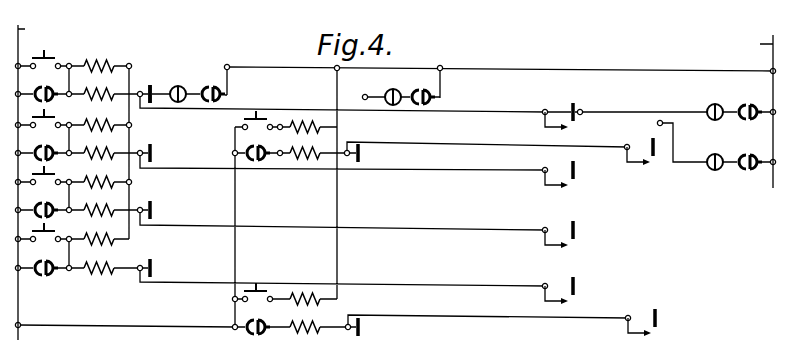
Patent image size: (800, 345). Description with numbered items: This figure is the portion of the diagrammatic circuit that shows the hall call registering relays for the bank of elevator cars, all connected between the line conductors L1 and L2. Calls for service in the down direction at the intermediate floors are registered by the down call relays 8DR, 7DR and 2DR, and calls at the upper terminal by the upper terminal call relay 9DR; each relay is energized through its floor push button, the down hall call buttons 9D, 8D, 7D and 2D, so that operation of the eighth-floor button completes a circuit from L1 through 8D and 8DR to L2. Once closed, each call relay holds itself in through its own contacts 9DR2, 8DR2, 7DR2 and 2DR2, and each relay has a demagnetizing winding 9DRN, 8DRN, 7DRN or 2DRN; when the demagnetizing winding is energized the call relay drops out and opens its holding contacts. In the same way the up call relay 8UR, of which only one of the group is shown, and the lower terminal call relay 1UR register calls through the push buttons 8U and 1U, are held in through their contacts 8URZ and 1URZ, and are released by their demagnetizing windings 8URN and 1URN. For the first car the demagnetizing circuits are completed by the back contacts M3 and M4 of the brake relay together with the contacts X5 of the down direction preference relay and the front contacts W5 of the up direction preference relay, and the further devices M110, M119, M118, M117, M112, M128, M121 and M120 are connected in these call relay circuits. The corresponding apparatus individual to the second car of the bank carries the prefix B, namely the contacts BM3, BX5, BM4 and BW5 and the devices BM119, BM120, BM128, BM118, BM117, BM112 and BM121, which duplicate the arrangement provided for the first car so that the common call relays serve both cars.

The line conductor L1 is at (29, 182).
The line conductor L2 is at (749, 111).
The switch contact 9D is at (50, 55).
The upper terminal call relay 9DR is at (101, 58).
The relay contact 9DR2 is at (40, 88).
The resistor 9DRN is at (96, 87).
The relay M110 is at (158, 85).
The relay coil M119 is at (150, 87).
The back contacts of brake relay M3 is at (182, 86).
The contacts of down direction preference relay X5 is at (222, 96).
The down hall call push button 8D is at (50, 115).
The down call relay 8DR is at (96, 118).
The holding contacts of down call relay 8DR2 is at (40, 147).
The demagnetizing winding 8DRN is at (96, 147).
The relay coil M118 is at (154, 157).
The switch contact 7D is at (50, 172).
The down call relay 7DR is at (97, 176).
The relay contact 7DR2 is at (40, 205).
The resistor 7DRN is at (96, 205).
The relay coil M117 is at (163, 208).
The down hall call button 2D is at (50, 231).
The down call relay 2DR is at (99, 232).
The holding contacts of down call relay 2DR2 is at (40, 261).
The demagnetizing winding 2DRN is at (96, 262).
The relay coil M112 is at (163, 268).
The up hall call push button 8U is at (246, 120).
The up call relay 8UR is at (302, 110).
The relay contact 8URZ is at (255, 146).
The resistor 8URN is at (290, 160).
The relay coil M128 is at (373, 153).
The switch contact 1U is at (257, 285).
The lower terminal call relay 1UR is at (301, 292).
The relay contact 1URZ is at (255, 320).
The resistor 1URN is at (322, 321).
The relay coil M121 is at (374, 327).
The terminal M120 is at (360, 88).
The back contacts of brake relay M4 is at (393, 91).
The front contacts of up direction preference relay W5 is at (436, 99).
The relay coil BM119 is at (570, 109).
The back contacts of brake relay of car B BM3 is at (703, 105).
The contacts of down direction preference relay of car B BX5 is at (746, 104).
The terminal BM120 is at (652, 140).
The relay coil BM128 is at (623, 150).
The back contacts of brake relay of car B BM4 is at (702, 155).
The front contacts of up direction preference relay of car B BW5 is at (745, 155).
The relay coil BM118 is at (583, 174).
The relay coil BM117 is at (583, 234).
The relay coil BM112 is at (583, 290).
The relay coil BM121 is at (668, 322).